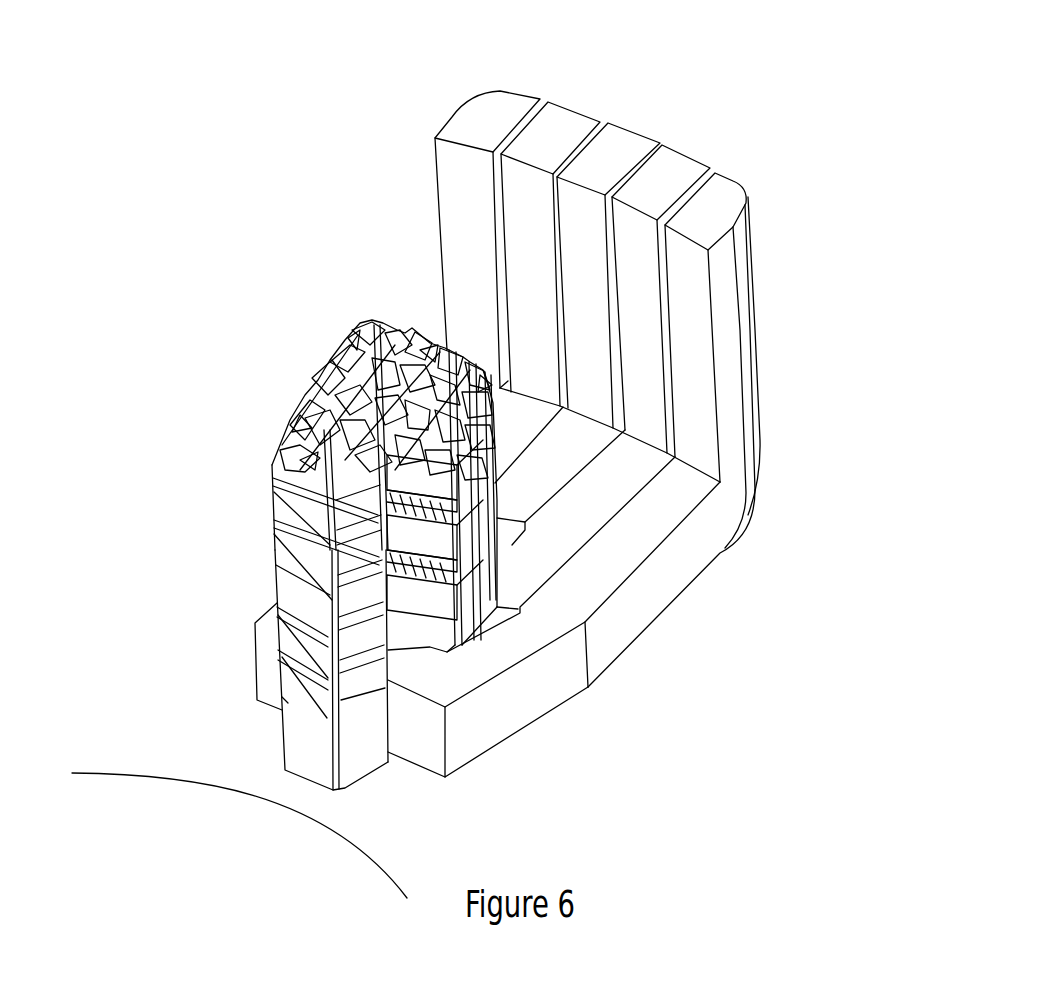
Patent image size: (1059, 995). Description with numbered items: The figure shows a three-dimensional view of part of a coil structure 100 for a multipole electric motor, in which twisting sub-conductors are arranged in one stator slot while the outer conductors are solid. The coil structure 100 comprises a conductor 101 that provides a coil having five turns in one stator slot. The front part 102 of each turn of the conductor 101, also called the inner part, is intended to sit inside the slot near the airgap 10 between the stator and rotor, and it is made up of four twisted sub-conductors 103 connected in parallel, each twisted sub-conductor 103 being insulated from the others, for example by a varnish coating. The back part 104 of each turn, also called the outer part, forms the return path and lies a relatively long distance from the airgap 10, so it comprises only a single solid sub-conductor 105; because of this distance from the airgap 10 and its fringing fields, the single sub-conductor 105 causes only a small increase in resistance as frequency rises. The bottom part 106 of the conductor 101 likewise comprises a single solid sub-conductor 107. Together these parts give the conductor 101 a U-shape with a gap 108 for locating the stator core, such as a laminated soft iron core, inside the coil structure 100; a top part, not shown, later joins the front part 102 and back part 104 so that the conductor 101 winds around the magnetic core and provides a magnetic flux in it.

The airgap 10 is at (280, 763).
The coil structure 100 is at (577, 393).
The conductor 101 is at (722, 197).
The front part 102 is at (324, 489).
The twisted sub-conductor 103 is at (417, 650).
The back part 104 is at (535, 286).
The single sub-conductor 105 is at (726, 330).
The bottom part 106 is at (742, 572).
The single sub-conductor 107 is at (620, 628).
The gap 108 is at (381, 298).